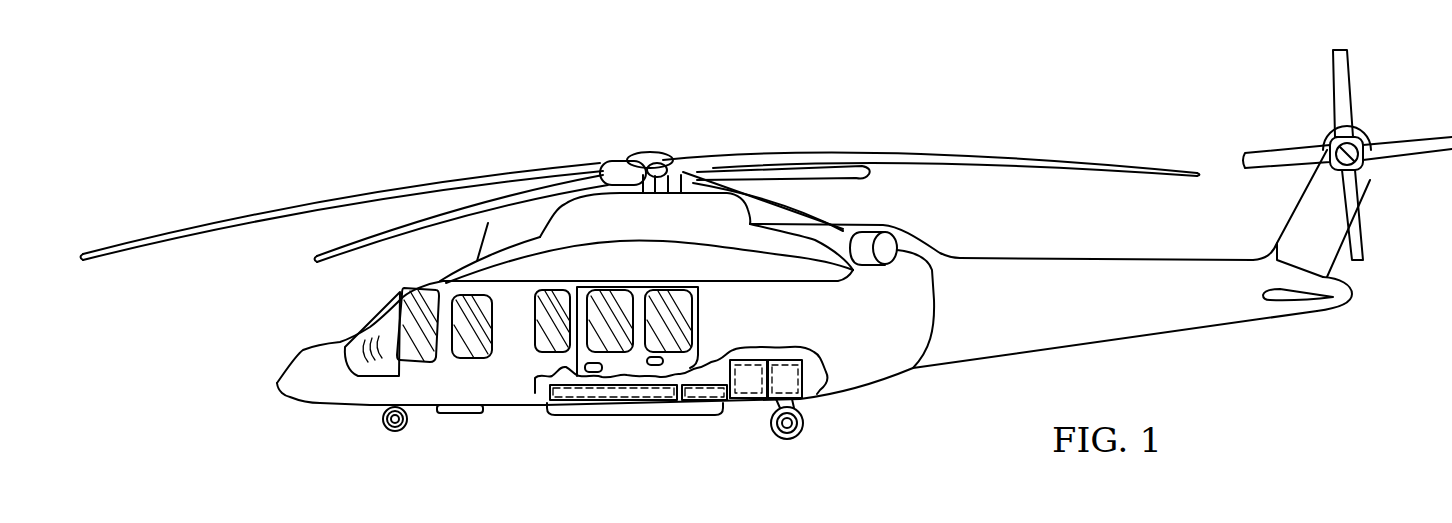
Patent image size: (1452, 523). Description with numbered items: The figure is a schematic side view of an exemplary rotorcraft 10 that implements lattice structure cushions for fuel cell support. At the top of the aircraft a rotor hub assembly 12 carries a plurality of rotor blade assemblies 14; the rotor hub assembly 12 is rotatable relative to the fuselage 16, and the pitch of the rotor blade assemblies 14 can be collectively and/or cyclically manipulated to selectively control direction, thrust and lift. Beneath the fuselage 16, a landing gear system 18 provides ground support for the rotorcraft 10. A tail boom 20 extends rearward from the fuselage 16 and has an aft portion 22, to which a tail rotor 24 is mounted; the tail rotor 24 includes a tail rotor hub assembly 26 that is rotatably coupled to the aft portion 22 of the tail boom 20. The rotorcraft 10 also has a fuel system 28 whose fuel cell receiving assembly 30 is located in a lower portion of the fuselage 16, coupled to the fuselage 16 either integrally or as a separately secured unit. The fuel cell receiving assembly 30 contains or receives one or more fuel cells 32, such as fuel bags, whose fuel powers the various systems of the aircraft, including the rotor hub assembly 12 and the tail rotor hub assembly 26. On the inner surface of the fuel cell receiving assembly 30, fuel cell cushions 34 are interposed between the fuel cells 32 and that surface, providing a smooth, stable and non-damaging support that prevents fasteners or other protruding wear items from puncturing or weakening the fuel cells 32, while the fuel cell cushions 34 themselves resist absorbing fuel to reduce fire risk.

The rotorcraft 10 is at (488, 139).
The rotor hub assembly 12 is at (646, 148).
The rotor blade assemblies 14 is at (953, 153).
The fuselage 16 is at (427, 407).
The landing gear system 18 is at (803, 423).
The tail boom 20 is at (941, 369).
The aft portion 22 is at (1317, 313).
The tail rotor 24 is at (1372, 126).
The tail rotor hub assembly 26 is at (1365, 171).
The fuel system 28 is at (614, 410).
The fuel cell receiving assembly 30 is at (713, 378).
The fuel cells 32 is at (750, 370).
The fuel cell cushions 34 is at (740, 403).